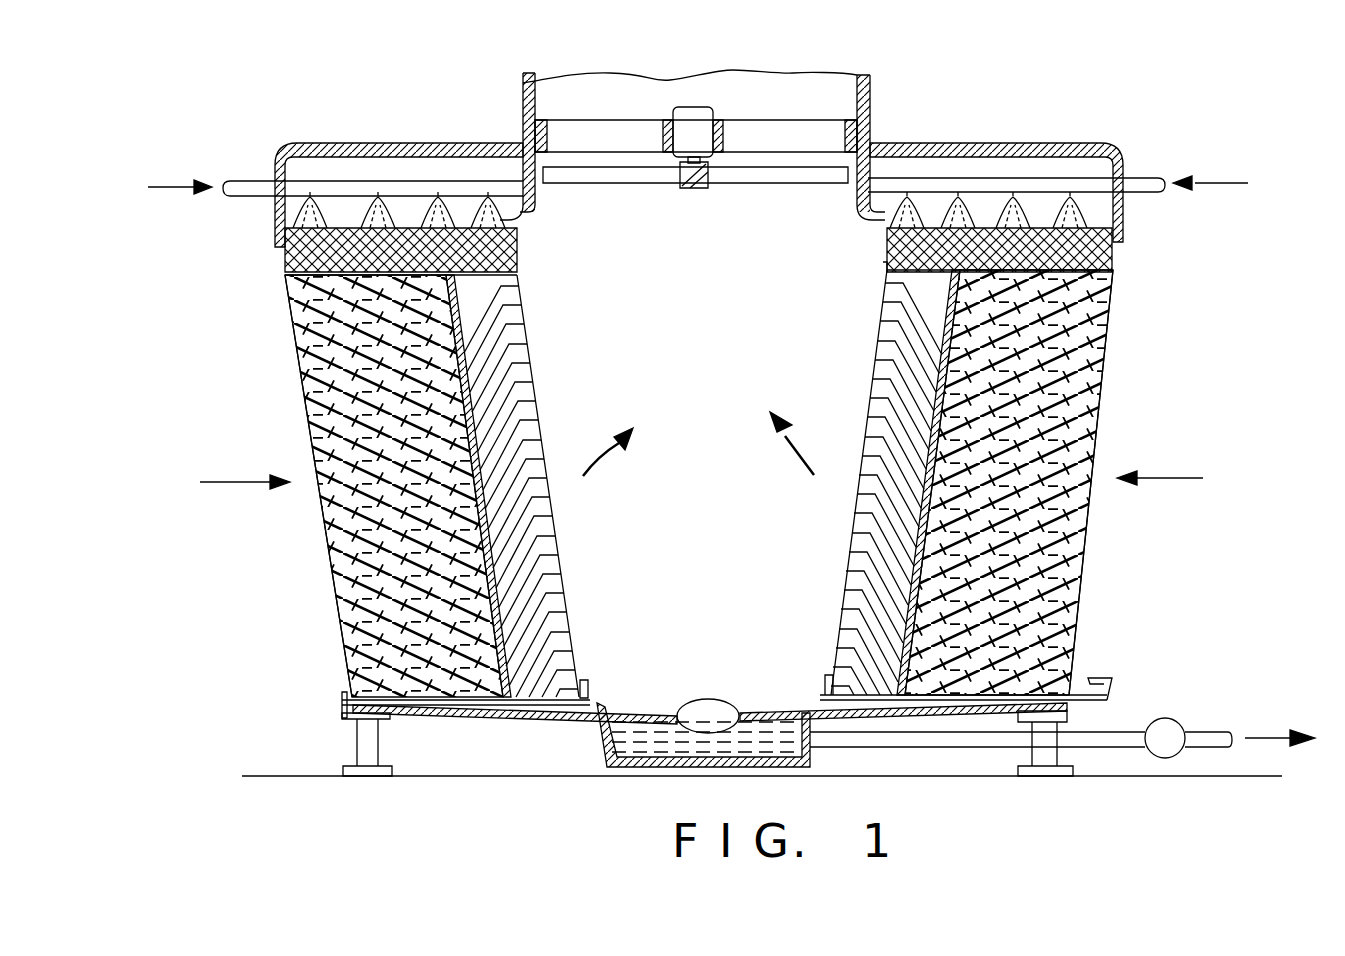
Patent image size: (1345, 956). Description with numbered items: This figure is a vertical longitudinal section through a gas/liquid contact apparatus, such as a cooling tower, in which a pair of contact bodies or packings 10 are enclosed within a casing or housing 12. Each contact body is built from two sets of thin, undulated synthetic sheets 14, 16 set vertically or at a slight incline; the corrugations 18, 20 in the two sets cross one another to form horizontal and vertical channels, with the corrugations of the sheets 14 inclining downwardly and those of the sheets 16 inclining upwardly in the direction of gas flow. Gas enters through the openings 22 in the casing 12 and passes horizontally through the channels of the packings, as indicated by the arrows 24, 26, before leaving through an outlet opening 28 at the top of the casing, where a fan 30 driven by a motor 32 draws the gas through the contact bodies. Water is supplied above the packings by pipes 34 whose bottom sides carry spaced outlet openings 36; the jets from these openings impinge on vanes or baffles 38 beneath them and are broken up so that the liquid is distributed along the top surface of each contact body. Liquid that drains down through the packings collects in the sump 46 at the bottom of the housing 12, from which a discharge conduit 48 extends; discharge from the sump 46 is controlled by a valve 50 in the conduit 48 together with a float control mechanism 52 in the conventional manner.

The contact bodies or packings 10 is at (292, 337).
The casing or housing 12 is at (1080, 142).
The first set of sheets 14 is at (307, 415).
The second set of sheets 16 is at (312, 460).
The corrugations 18 is at (297, 367).
The corrugations 20 is at (330, 560).
The openings 22 is at (280, 247).
The arrow 24 is at (220, 477).
The arrow 26 is at (1173, 472).
The outlet opening 28 is at (830, 87).
The fan 30 is at (627, 103).
The motor 32 is at (698, 107).
The pipes 34 is at (240, 180).
The outlet openings 36 is at (378, 193).
The vanes or baffles 38 is at (883, 263).
The sump 46 is at (627, 765).
The discharge conduit 48 is at (972, 742).
The valve 50 is at (1170, 727).
The float control mechanism 52 is at (710, 698).